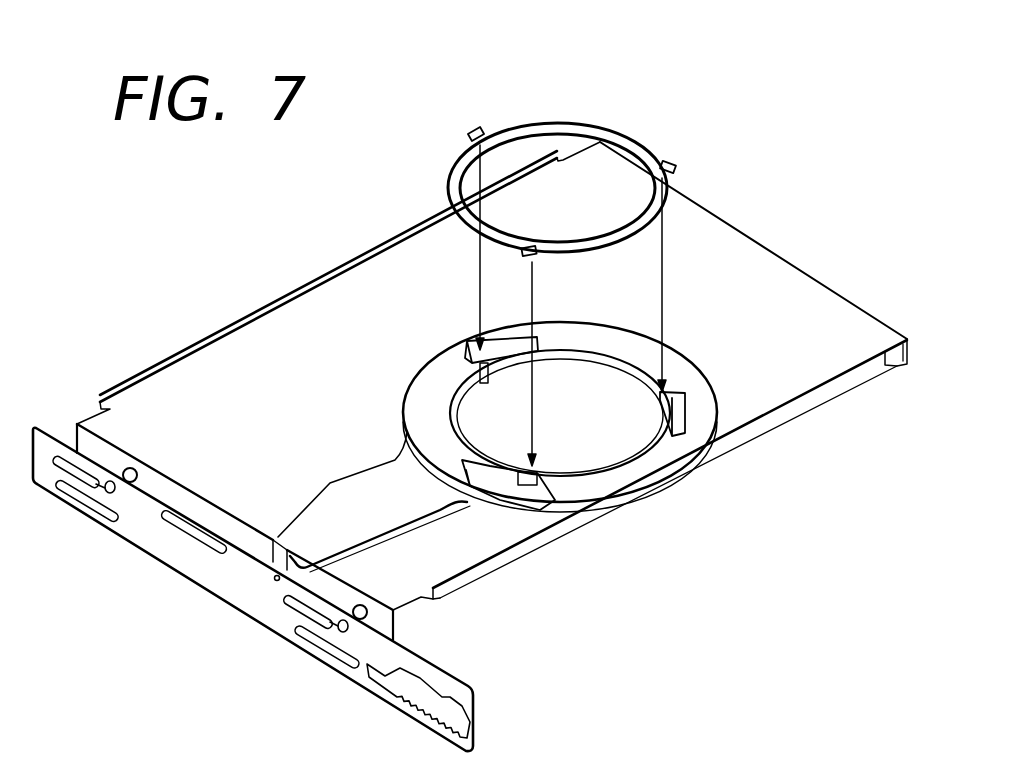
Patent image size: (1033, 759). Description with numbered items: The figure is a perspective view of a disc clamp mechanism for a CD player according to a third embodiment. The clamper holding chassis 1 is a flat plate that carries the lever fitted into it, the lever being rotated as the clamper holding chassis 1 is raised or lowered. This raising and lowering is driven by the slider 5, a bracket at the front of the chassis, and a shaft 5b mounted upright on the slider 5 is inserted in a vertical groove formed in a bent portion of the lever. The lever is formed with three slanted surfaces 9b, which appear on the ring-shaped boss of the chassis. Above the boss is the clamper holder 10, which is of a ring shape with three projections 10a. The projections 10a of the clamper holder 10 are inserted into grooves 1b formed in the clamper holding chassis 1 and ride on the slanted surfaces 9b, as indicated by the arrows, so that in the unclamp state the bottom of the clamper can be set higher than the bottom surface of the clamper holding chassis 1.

The clamper holding chassis 1 is at (495, 563).
The grooves 1b is at (482, 400).
The slider 5 is at (150, 546).
The shaft 5b is at (276, 581).
The slanted surfaces 9b is at (511, 348).
The clamper holder 10 is at (617, 131).
The projections 10a is at (475, 131).